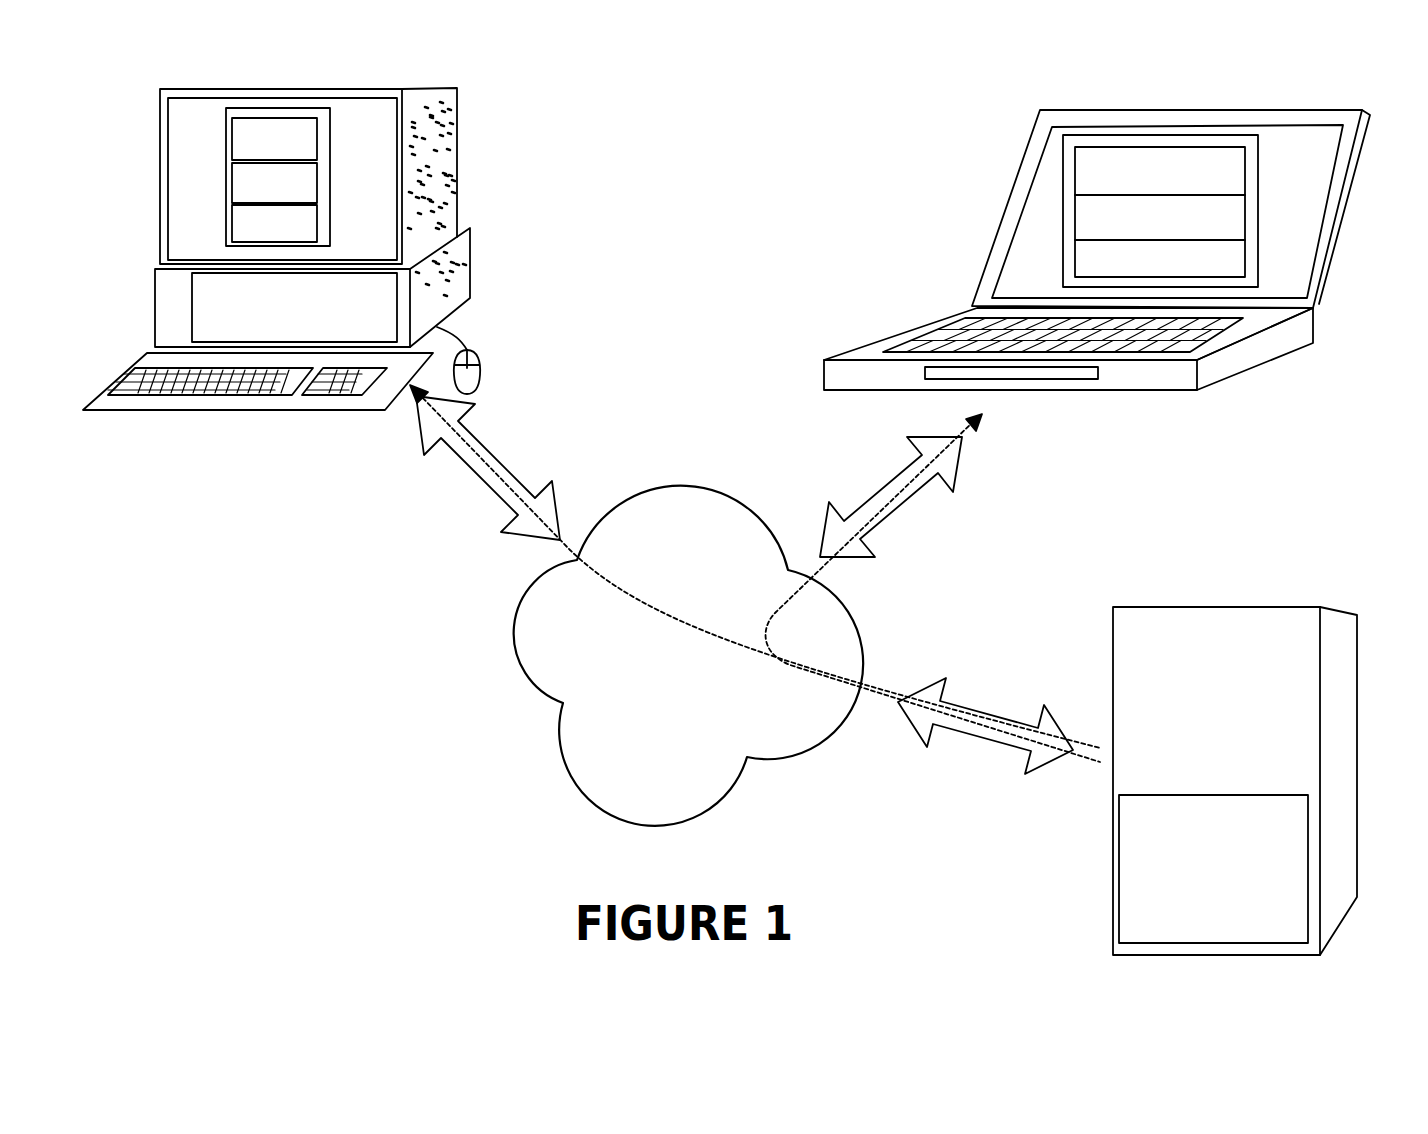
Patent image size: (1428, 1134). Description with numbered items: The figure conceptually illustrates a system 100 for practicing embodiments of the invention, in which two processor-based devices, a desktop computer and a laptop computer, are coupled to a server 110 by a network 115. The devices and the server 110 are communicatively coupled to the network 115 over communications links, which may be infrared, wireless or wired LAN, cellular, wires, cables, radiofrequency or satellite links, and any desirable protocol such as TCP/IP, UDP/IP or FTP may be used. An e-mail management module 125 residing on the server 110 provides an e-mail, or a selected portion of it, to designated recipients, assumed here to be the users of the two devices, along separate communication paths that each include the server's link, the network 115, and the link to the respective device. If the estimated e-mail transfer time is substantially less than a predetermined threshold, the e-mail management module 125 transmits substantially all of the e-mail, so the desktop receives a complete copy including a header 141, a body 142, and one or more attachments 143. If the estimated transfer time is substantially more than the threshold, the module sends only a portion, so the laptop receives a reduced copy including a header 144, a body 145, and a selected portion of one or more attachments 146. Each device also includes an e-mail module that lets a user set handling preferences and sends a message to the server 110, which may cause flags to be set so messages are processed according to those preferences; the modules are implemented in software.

The system 100 is at (389, 787).
The server 110 is at (1194, 704).
The network 115 is at (651, 770).
The e-mail management module 125 is at (1193, 930).
The header 141 is at (253, 151).
The body 142 is at (253, 196).
The attachments 143 is at (253, 235).
The header 144 is at (1138, 176).
The body 145 is at (1135, 226).
The selected portion of attachments 146 is at (1138, 273).